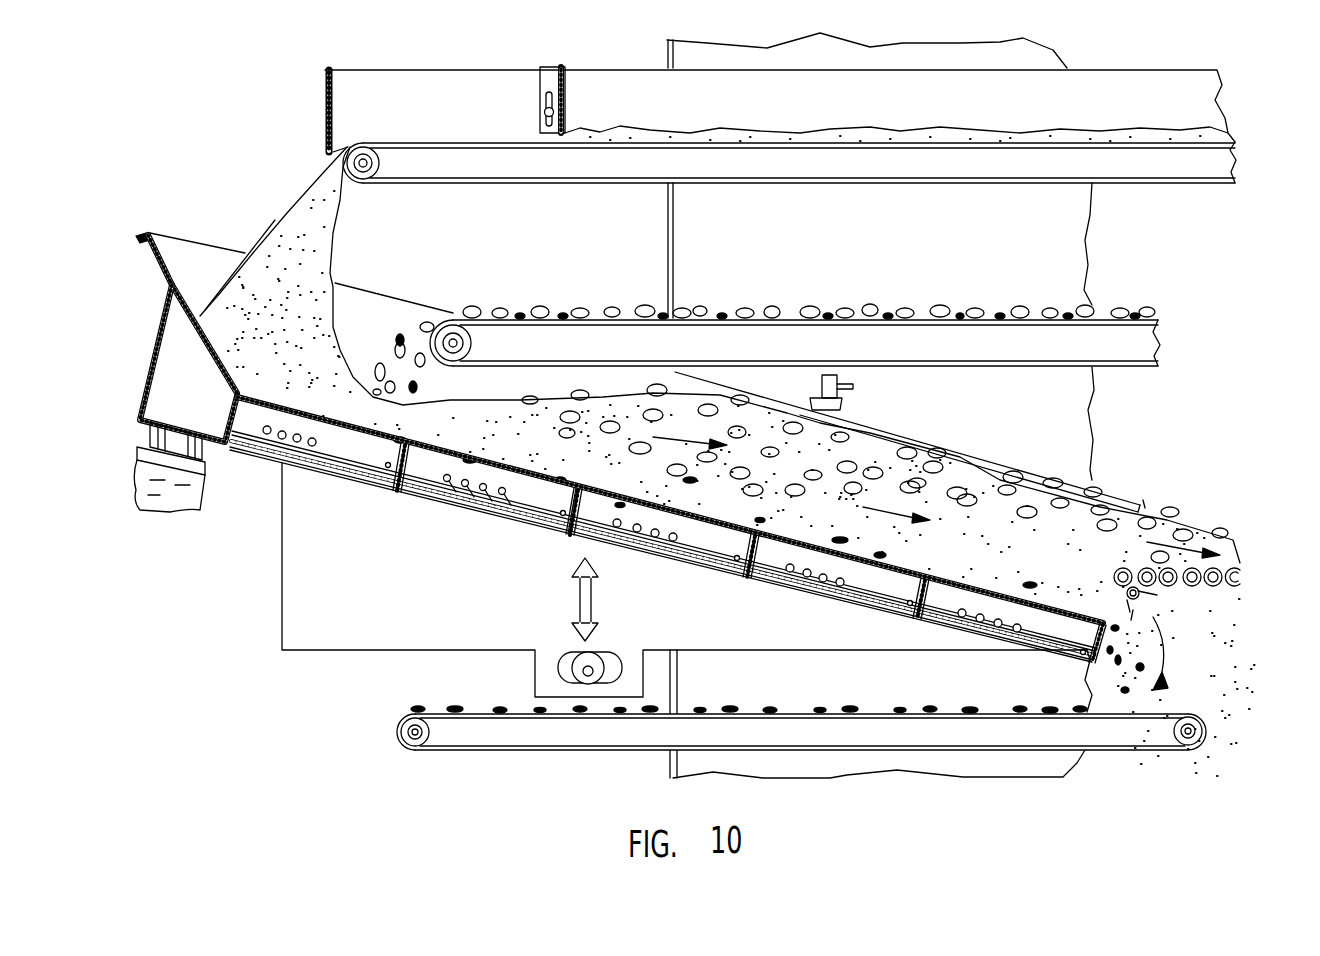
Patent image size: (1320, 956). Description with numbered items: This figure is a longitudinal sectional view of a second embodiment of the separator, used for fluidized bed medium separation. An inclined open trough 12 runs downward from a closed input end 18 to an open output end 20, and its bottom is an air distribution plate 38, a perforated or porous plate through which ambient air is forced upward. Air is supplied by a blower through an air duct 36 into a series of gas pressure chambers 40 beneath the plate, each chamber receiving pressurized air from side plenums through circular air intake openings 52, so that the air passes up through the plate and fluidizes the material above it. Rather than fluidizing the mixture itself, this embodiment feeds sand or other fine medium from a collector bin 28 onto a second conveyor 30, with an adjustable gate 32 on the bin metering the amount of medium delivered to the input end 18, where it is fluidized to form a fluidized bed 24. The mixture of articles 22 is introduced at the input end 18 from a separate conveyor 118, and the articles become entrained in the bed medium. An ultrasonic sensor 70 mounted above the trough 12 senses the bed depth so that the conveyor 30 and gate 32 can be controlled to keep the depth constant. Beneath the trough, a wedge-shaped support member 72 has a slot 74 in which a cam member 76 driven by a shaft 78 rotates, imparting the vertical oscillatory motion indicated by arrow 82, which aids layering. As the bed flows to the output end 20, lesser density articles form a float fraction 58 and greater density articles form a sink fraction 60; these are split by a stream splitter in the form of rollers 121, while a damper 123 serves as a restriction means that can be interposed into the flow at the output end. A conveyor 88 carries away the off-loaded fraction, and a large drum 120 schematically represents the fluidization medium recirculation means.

The open trough 12 is at (176, 222).
The closed input end 18 is at (207, 270).
The open output end 20 is at (1143, 500).
The mixture of articles 22 is at (483, 307).
The fluidized bed 24 is at (972, 460).
The collector bin 28 is at (453, 67).
The second conveyor 30 is at (537, 187).
The adjustable gate 32 is at (566, 105).
The air duct 36 is at (197, 487).
The air distribution plate 38 is at (567, 490).
The gas pressure chambers 40 is at (373, 447).
The air intake openings 52 is at (444, 482).
The float fraction 58 is at (1177, 510).
The sink fraction 60 is at (1140, 667).
The ultrasonic sensor 70 is at (853, 400).
The wedge-shaped support member 72 is at (462, 617).
The slot 74 is at (557, 665).
The cam member 76 is at (593, 655).
The shaft 78 is at (597, 670).
The arrow 82 is at (570, 598).
The conveyor 88 is at (1130, 750).
The separate conveyor 118 is at (1117, 368).
The large drum 120 is at (897, 247).
The rollers 121 is at (1243, 577).
The damper 123 is at (1167, 597).